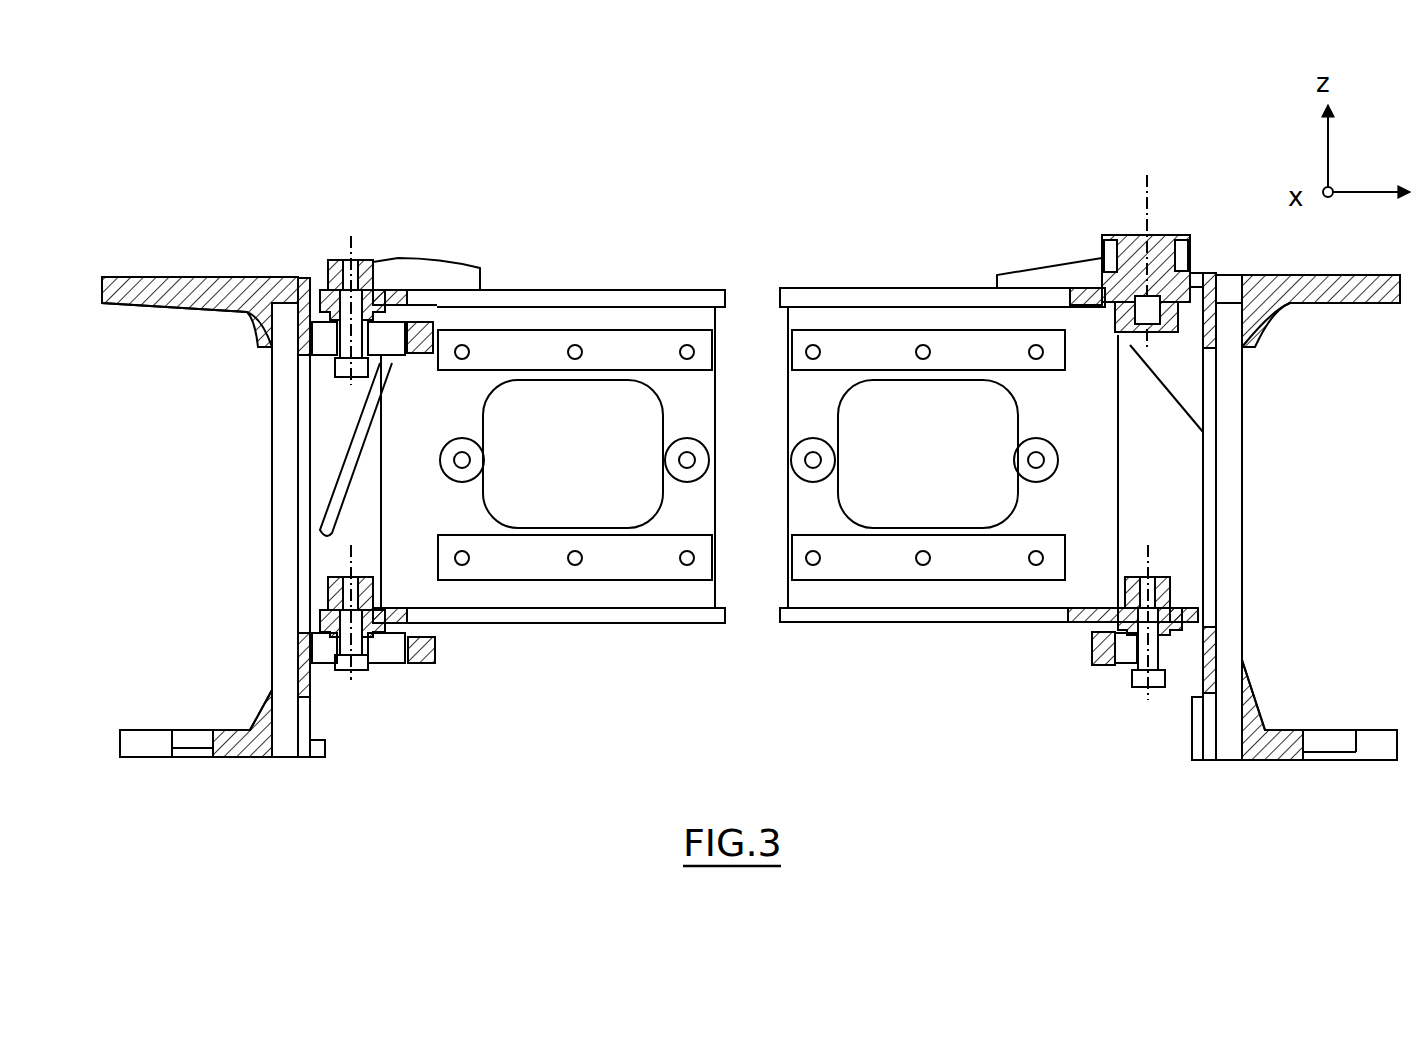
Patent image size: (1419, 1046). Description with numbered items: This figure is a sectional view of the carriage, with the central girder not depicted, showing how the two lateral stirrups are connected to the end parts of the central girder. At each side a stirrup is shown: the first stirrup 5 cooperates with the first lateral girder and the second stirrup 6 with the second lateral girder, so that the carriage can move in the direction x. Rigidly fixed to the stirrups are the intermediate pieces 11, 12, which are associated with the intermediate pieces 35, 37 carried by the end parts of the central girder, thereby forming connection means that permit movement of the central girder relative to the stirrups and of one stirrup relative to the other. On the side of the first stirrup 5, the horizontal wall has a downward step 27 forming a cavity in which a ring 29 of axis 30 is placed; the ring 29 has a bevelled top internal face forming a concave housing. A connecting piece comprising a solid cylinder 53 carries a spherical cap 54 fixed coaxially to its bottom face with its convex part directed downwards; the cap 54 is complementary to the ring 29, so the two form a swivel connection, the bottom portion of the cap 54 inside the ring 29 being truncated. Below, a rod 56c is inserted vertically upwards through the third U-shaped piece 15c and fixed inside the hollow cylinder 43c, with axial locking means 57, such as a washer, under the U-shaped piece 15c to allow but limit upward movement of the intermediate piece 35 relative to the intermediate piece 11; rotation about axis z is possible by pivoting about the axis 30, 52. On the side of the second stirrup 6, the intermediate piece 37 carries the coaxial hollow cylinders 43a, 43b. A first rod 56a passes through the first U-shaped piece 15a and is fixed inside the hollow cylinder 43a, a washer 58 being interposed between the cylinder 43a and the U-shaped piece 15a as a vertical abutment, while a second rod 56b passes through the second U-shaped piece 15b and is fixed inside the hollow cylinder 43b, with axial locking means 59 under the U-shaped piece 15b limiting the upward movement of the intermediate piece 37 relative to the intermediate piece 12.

The first stirrup 5 is at (1318, 292).
The second stirrup 6 is at (150, 743).
The intermediate piece 11 is at (1180, 736).
The intermediate piece 12 is at (336, 743).
The first U-shaped piece 15a is at (437, 333).
The second U-shaped piece 15b is at (435, 645).
The third U-shaped piece 15c is at (1092, 652).
The downward step 27 is at (1165, 338).
The ring 29 is at (1113, 340).
The axis 30 is at (1147, 195).
The axis 52 is at (1147, 345).
The intermediate piece 35 is at (889, 590).
The intermediate piece 37 is at (659, 590).
The hollow cylinder 43a is at (330, 268).
The hollow cylinder 43b is at (335, 593).
The hollow cylinder 43c is at (1168, 590).
The solid cylinder 53 is at (1163, 236).
The spherical cap 54 is at (1123, 235).
The first rod 56a is at (352, 340).
The second rod 56b is at (360, 648).
The rod 56c is at (1147, 653).
The axial locking means 57 is at (1165, 688).
The washer 58 is at (355, 343).
The axial locking means 59 is at (300, 690).